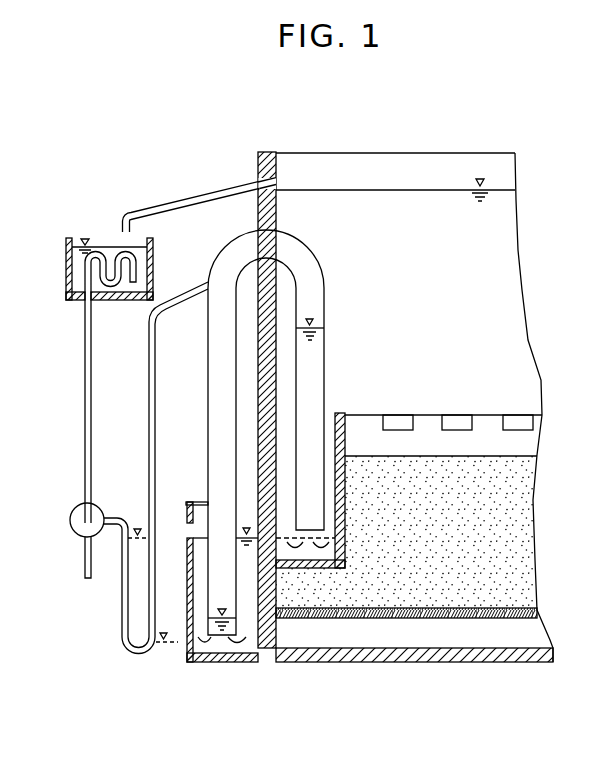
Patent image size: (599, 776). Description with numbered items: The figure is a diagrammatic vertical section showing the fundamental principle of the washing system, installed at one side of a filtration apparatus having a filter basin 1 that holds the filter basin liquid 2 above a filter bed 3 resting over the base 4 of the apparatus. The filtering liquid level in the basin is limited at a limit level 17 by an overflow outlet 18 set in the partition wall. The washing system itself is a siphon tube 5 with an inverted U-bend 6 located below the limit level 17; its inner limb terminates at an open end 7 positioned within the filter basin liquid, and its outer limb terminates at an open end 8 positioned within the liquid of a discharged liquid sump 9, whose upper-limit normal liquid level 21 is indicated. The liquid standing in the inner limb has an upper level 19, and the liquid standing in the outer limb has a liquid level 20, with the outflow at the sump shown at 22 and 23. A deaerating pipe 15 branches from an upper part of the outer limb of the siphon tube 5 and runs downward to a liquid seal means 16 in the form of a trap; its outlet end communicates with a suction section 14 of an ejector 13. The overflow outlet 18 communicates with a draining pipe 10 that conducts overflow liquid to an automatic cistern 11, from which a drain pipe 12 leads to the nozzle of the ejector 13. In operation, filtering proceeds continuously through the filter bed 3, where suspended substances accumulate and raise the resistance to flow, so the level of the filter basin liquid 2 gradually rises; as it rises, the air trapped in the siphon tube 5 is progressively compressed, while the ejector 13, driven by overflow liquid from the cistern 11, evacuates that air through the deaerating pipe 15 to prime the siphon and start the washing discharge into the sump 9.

The filter basin 1 is at (462, 152).
The filter basin liquid 2 is at (522, 297).
The filter bed 3 is at (517, 549).
The bottom slab 4 is at (475, 662).
The siphon tube 5 is at (325, 296).
The inverted U-bend 6 is at (277, 212).
The open end 7 is at (324, 519).
The open end 8 is at (222, 635).
The discharged liquid sump 9 is at (187, 656).
The draining pipe 10 is at (204, 193).
The automatic cistern 11 is at (66, 270).
The drain pipe 12 is at (84, 373).
The ejector 13 is at (70, 519).
The suction section 14 is at (105, 518).
The deaerating pipe 15 is at (155, 373).
The liquid seal means 16 is at (122, 615).
The limit level 17 is at (395, 190).
The overflow outlet 18 is at (283, 185).
The upper level 19 is at (320, 330).
The liquid level 20 is at (232, 612).
The upper-limit normal liquid level 21 is at (200, 538).
The discharge flow 22 is at (322, 553).
The discharge flow 23 is at (242, 645).